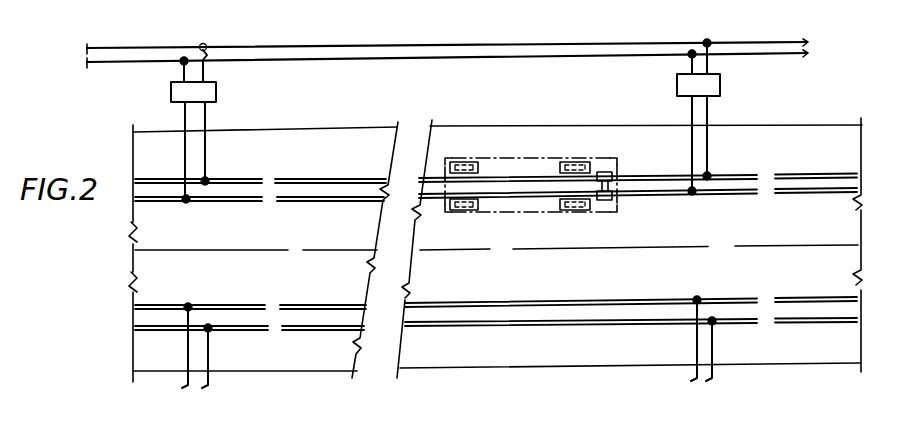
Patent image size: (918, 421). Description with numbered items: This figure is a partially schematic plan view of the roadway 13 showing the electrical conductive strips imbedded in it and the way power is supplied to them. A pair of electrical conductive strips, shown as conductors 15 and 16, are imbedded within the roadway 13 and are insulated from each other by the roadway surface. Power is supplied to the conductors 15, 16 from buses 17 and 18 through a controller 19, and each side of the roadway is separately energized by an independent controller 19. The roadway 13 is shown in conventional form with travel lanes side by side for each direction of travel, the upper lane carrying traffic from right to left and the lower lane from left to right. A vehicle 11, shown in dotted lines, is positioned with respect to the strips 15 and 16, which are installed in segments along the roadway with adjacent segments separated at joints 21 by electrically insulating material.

The vehicle 11 is at (510, 225).
The roadway 13 is at (304, 238).
The conductor 15 is at (725, 173).
The conductor 16 is at (614, 200).
The bus 17 is at (567, 44).
The bus 18 is at (548, 56).
The controller 19 is at (216, 93).
The rail gap 21 is at (268, 172).